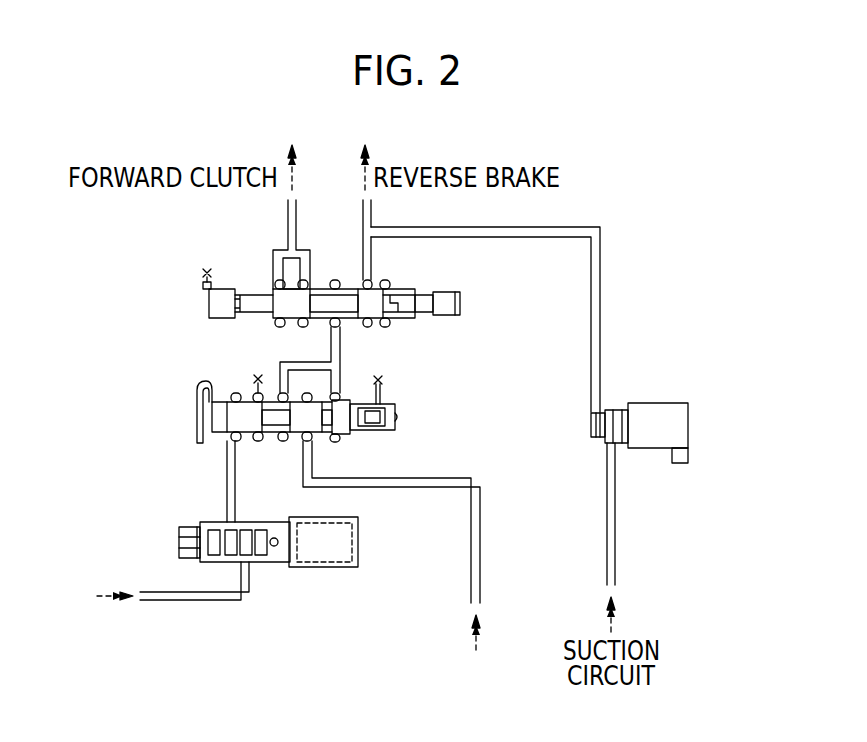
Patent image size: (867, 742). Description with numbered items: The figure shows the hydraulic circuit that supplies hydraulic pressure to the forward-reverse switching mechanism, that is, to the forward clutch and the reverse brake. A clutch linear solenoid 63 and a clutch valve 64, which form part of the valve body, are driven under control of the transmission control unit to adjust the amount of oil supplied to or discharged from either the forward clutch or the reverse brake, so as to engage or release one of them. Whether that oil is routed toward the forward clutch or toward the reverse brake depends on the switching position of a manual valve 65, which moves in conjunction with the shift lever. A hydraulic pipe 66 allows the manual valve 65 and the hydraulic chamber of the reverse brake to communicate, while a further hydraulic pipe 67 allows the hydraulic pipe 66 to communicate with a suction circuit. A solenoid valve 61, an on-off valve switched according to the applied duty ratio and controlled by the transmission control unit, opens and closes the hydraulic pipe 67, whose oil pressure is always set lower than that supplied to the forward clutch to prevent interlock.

The solenoid valve 61 is at (690, 423).
The clutch linear solenoid 63 is at (360, 543).
The clutch valve 64 is at (393, 408).
The manual valve 65 is at (208, 307).
The hydraulic pipe (circuit) 66 is at (372, 250).
The hydraulic pipe (circuit) 67 is at (600, 287).